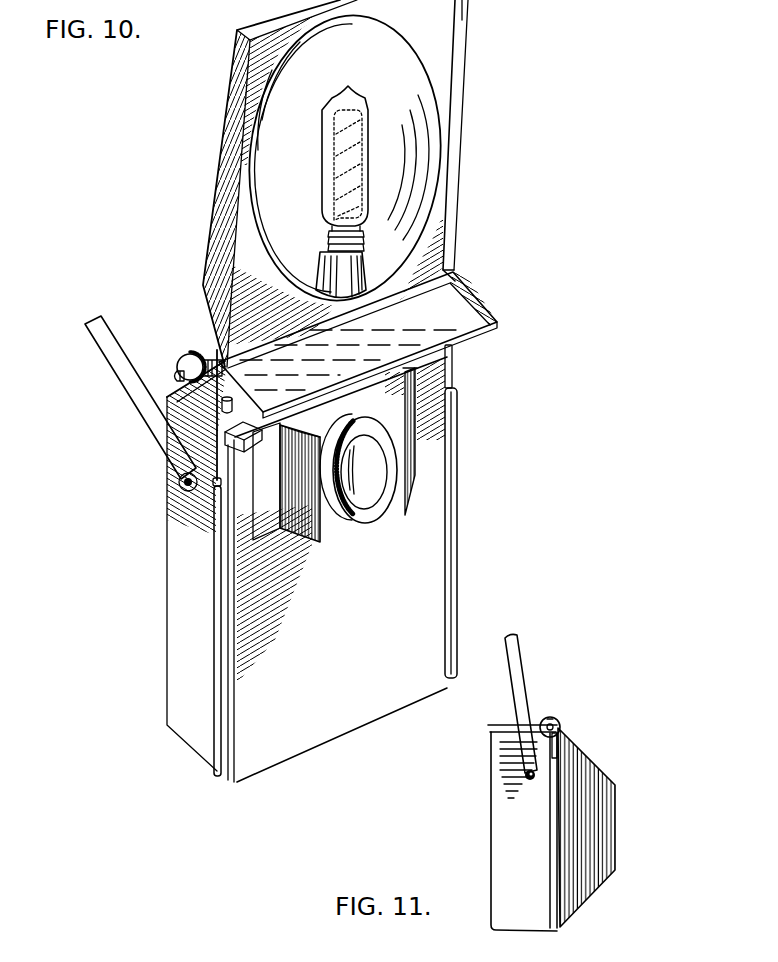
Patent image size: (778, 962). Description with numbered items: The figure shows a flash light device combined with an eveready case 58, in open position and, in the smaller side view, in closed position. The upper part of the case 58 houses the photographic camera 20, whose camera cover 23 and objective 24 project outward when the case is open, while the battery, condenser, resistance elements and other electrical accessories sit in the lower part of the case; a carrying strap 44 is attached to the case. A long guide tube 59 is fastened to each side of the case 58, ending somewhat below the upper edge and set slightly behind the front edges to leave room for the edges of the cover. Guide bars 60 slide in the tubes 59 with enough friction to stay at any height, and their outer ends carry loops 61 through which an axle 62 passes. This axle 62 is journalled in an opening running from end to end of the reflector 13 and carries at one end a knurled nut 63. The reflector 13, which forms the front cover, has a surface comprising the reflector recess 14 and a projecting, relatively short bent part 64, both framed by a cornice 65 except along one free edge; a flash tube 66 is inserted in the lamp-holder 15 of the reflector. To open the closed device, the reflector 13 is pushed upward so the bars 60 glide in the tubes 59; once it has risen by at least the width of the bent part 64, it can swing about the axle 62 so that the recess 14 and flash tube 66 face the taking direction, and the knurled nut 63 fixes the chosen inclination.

In FIG. 10, the reflector 13 is at (443, 216).
In FIG. 11, the reflector 13 is at (605, 836).
In FIG. 10, the reflector recess 14 is at (427, 148).
In FIG. 10, the lamp-holder 15 is at (358, 264).
In FIG. 10, the photographic camera 20 is at (268, 505).
In FIG. 10, the camera cover 23 is at (304, 527).
In FIG. 10, the objective 24 is at (367, 514).
In FIG. 10, the carrying strap 44 is at (113, 362).
In FIG. 11, the carrying strap 44 is at (519, 690).
In FIG. 10, the case 58 is at (185, 575).
In FIG. 11, the case 58 is at (505, 852).
In FIG. 10, the guide tube 59 is at (456, 538).
In FIG. 11, the guide tube 59 is at (552, 835).
In FIG. 10, the guide bar 60 is at (216, 452).
In FIG. 11, the guide bar 60 is at (561, 742).
In FIG. 10, the loop 61 is at (213, 360).
In FIG. 10, the axle 62 is at (179, 376).
In FIG. 11, the axle 62 is at (549, 717).
In FIG. 10, the knurled nut 63 is at (189, 360).
In FIG. 11, the knurled nut 63 is at (558, 721).
In FIG. 10, the projecting part 64 is at (440, 300).
In FIG. 10, the cornice 65 is at (460, 13).
In FIG. 10, the flash tube 66 is at (361, 127).